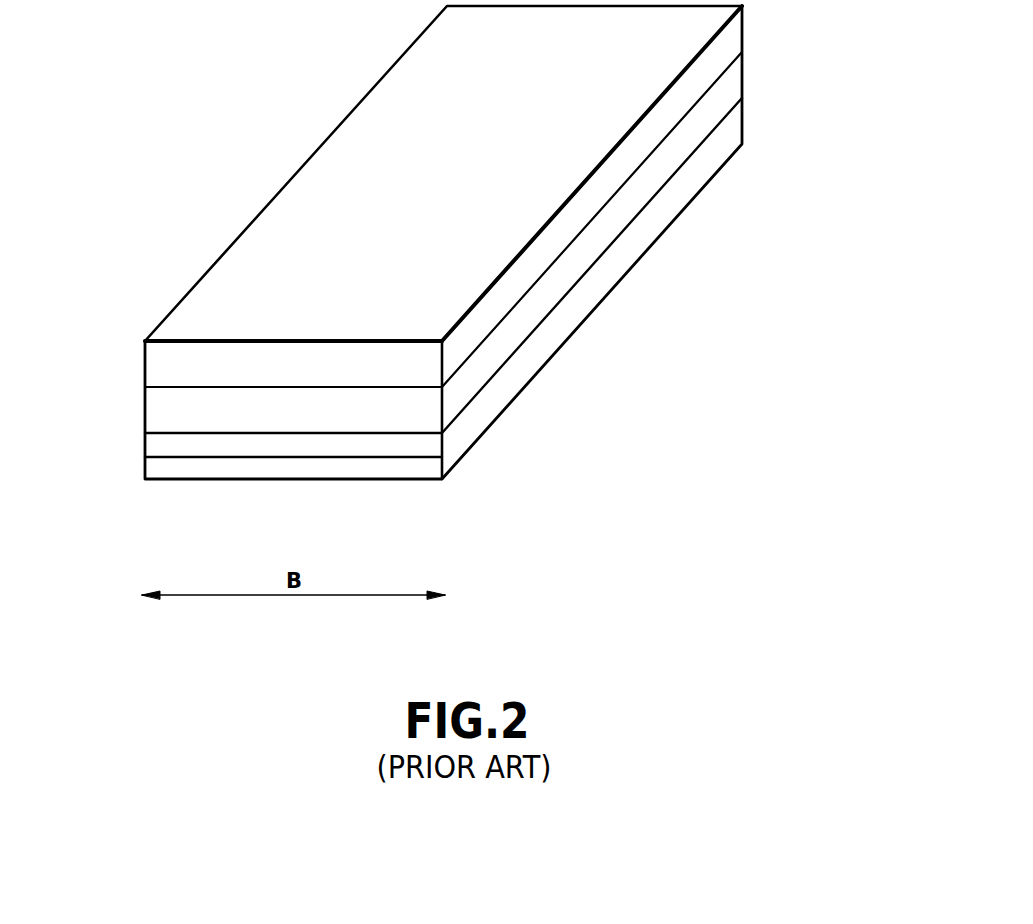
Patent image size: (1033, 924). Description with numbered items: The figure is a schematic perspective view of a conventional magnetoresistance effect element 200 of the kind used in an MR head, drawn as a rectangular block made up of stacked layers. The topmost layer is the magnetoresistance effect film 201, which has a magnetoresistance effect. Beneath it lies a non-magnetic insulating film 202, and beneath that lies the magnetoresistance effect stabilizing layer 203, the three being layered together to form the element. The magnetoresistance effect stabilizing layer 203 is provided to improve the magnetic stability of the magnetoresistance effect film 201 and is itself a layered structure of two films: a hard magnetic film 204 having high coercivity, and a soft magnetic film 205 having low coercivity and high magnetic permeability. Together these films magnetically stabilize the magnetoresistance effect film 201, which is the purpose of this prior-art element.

The magnetoresistance effect element 200 is at (402, 270).
The magnetoresistance effect film 201 is at (140, 341).
The non-magnetic insulating film 202 is at (140, 387).
The magnetoresistance effect stabilizing layer 203 is at (140, 433).
The hard magnetic film 204 is at (355, 470).
The soft magnetic film 205 is at (415, 445).